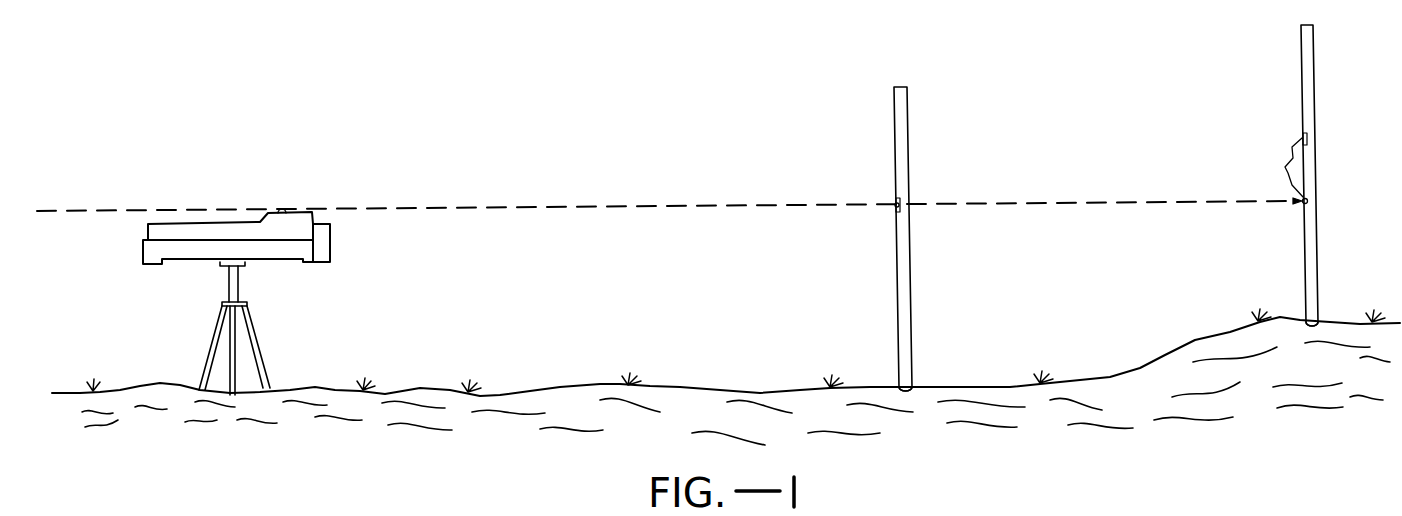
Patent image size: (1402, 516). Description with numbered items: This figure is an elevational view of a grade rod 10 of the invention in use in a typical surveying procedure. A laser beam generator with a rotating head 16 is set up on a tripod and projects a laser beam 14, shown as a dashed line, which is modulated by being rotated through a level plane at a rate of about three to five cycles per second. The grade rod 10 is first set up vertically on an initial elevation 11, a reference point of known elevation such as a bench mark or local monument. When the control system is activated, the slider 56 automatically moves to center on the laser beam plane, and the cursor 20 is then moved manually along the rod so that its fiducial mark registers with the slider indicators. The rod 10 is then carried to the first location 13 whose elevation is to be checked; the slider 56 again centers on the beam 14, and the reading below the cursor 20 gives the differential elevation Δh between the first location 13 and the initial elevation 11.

The grade rod 10 is at (912, 283).
The initial elevation 11 is at (912, 386).
The first location 13 is at (1322, 318).
The laser beam 14 is at (545, 207).
The rotating head 16 is at (281, 207).
The cursor 20 is at (896, 210).
The slider 56 is at (897, 204).